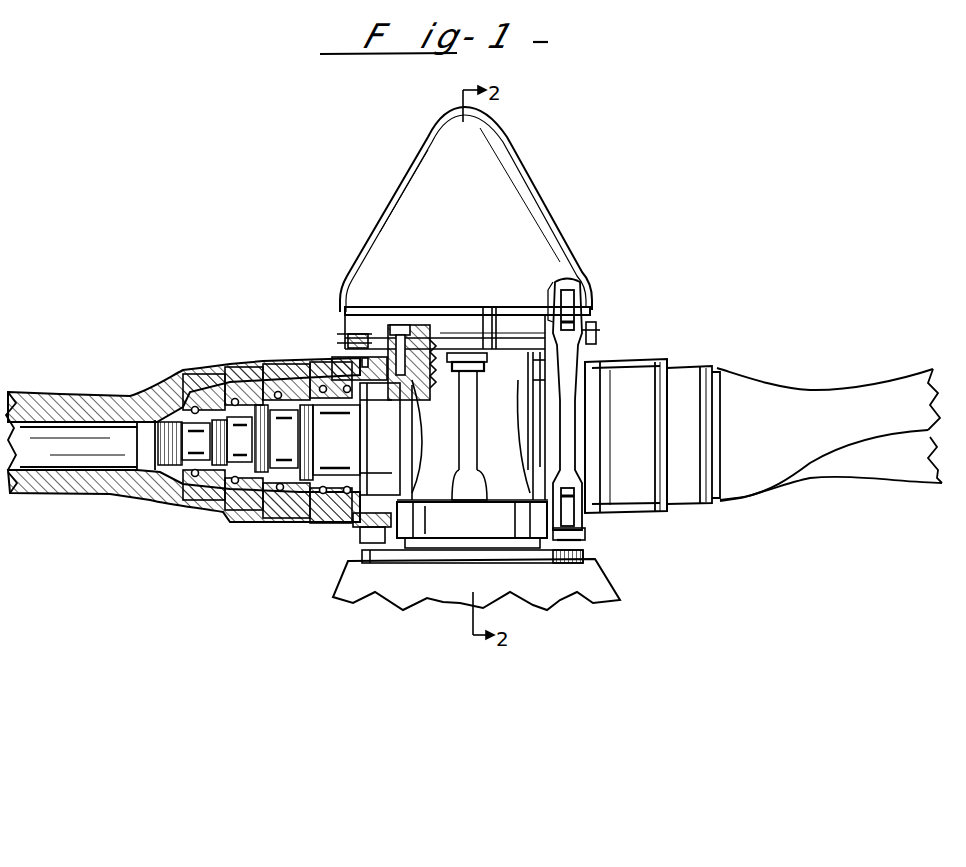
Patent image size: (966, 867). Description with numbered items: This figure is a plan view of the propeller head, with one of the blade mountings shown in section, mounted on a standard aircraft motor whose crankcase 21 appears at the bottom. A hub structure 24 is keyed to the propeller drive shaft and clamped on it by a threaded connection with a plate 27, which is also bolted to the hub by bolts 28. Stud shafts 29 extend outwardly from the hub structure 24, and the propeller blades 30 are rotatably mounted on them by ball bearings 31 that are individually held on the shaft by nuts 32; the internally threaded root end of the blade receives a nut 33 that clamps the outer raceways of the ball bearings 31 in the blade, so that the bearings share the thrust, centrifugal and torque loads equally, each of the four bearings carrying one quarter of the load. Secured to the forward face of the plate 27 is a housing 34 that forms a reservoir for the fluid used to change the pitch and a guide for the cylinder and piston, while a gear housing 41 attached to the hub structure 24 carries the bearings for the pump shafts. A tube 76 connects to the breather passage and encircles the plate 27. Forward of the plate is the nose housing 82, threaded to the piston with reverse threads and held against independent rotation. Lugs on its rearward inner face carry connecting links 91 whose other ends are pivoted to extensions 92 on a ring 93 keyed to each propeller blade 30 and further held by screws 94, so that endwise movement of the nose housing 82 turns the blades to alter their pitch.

The crankcase 21 is at (606, 592).
The hub structure 24 is at (517, 375).
The plate 27 is at (592, 349).
The bolts 28 is at (400, 325).
The stud shafts 29 is at (352, 443).
The propeller blades 30 is at (30, 490).
The ball bearings 31 is at (200, 398).
The nuts 32 is at (180, 405).
The nut 33 is at (373, 380).
The housing 34 is at (592, 323).
The gear housing 41 is at (483, 520).
The tube 76 is at (600, 331).
The nose housing 82 is at (560, 240).
The connecting links 91 is at (576, 410).
The extensions 92 is at (368, 538).
The ring 93 is at (356, 526).
The screws 94 is at (352, 348).